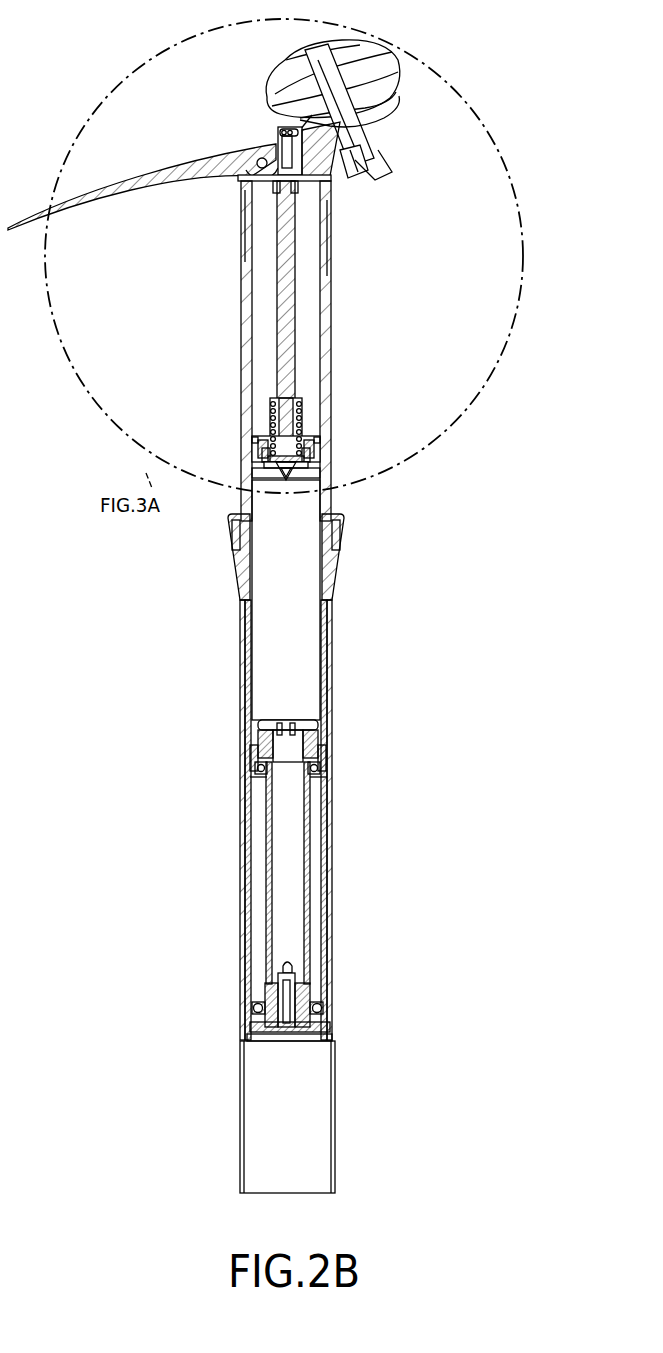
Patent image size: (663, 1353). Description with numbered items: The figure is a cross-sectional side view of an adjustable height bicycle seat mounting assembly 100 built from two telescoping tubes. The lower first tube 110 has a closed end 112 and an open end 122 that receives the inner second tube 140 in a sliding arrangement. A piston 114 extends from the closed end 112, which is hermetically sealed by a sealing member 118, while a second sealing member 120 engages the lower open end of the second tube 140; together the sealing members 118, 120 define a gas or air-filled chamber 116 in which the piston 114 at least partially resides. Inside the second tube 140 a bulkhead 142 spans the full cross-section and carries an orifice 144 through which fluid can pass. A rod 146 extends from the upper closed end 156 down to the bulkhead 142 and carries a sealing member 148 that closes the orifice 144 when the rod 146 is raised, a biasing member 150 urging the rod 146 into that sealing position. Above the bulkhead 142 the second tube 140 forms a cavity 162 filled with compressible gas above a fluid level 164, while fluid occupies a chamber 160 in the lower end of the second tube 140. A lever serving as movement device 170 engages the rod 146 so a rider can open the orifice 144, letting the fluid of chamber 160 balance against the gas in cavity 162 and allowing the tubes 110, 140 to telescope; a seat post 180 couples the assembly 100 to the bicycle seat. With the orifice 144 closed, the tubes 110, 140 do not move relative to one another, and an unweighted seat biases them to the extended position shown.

The seat mounting assembly 100 is at (128, 133).
The first tube 110 is at (240, 856).
The closed end 112 is at (310, 1042).
The piston 114 is at (300, 864).
The chamber 116 is at (322, 914).
The sealing member 118 is at (355, 1012).
The second sealing member 120 is at (352, 752).
The open end 122 is at (345, 466).
The second tube 140 is at (268, 372).
The bulkhead 142 is at (318, 437).
The orifice 144 is at (255, 476).
The rod 146 is at (290, 296).
The sealing member 148 is at (294, 478).
The biasing member 150 is at (303, 412).
The upper closed end 156 is at (308, 184).
The chamber 160 is at (305, 628).
The cavity 162 is at (262, 240).
The fluid level 164 is at (268, 376).
The movement device 170 is at (172, 164).
The seat post 180 is at (348, 40).